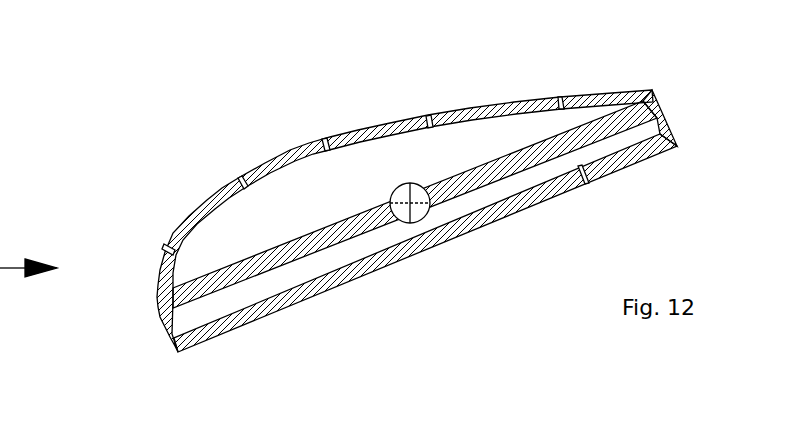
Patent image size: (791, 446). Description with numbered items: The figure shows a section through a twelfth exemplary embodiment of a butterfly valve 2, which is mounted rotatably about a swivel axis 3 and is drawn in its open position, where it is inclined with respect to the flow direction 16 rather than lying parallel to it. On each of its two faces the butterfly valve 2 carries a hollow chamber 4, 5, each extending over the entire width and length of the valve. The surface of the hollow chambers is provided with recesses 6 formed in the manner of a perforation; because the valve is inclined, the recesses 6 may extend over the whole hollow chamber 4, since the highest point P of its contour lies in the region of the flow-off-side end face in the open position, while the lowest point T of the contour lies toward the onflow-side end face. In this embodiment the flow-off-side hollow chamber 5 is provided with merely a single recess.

The butterfly valve 2 is at (477, 165).
The swivel axis 3 is at (403, 186).
The hollow chamber 4 is at (330, 170).
The hollow chamber 5 is at (368, 254).
The recesses 6 is at (168, 247).
The flow direction 16 is at (7, 262).
The highest point P is at (655, 80).
The lowest point T is at (184, 370).